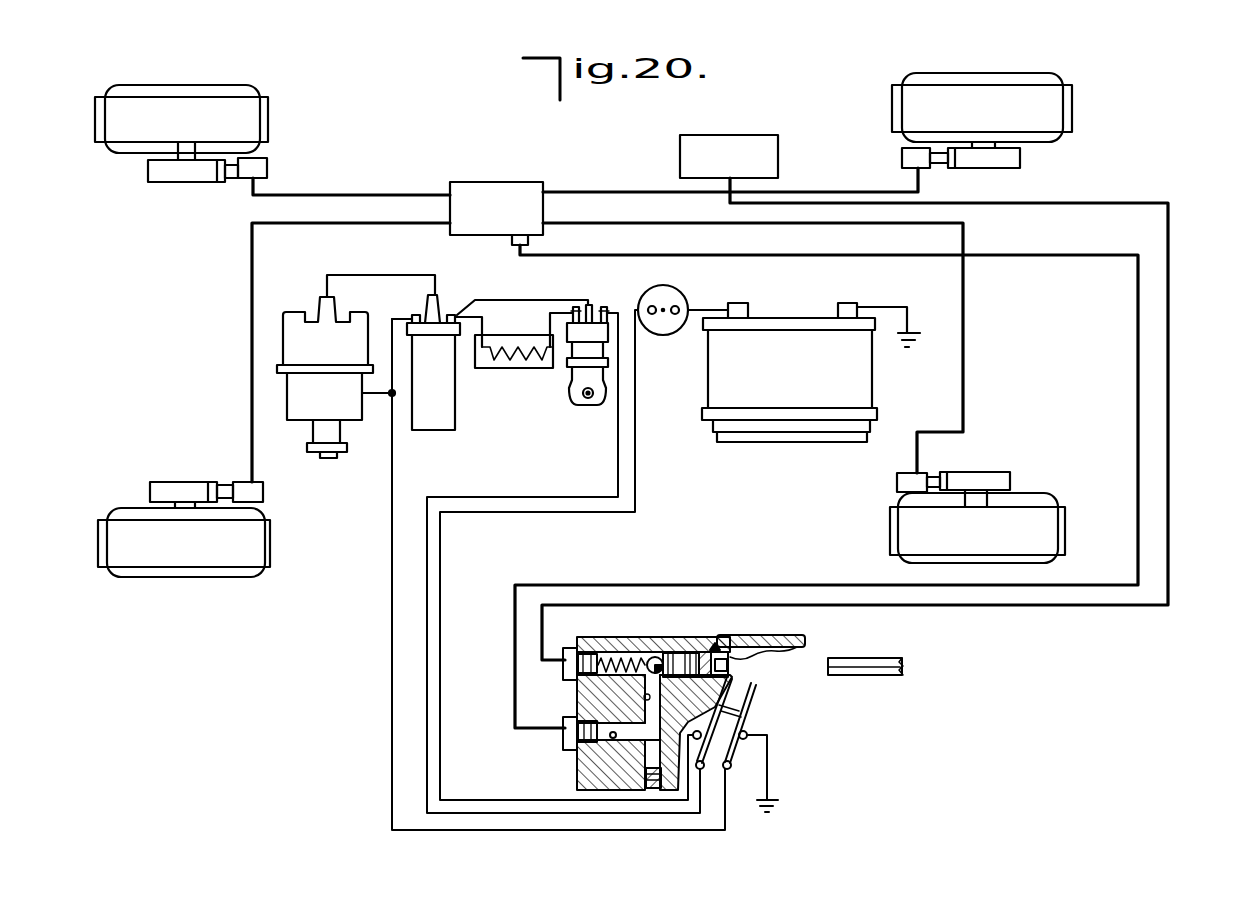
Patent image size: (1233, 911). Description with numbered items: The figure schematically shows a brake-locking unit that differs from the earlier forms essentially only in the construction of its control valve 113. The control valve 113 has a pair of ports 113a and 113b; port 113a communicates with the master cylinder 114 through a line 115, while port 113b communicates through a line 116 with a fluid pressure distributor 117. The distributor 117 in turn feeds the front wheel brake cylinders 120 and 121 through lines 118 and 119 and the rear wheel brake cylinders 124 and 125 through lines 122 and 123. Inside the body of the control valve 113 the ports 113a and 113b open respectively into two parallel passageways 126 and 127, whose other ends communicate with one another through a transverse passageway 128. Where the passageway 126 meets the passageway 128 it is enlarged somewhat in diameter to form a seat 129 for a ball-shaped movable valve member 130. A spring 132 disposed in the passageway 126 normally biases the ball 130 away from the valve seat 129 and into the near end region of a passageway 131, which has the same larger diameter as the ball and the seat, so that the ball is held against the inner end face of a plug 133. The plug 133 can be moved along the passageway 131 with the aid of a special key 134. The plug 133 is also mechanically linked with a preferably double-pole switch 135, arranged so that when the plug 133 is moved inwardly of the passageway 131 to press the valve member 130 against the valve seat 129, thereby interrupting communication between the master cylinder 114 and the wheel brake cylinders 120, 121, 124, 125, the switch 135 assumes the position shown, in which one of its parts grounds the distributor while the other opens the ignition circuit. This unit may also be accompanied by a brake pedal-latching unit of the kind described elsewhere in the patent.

The control valve 113 is at (633, 636).
The port 113a is at (562, 647).
The port 113b is at (566, 740).
The master cylinder 114 is at (760, 142).
The line 115 is at (1172, 410).
The line 116 is at (1136, 405).
The fluid pressure distributor 117 is at (493, 187).
The line 118 is at (392, 190).
The line 119 is at (250, 318).
The front wheel brake cylinder 120 is at (267, 167).
The front wheel brake cylinder 121 is at (243, 483).
The line 122 is at (592, 190).
The line 123 is at (968, 360).
The rear wheel brake cylinder 124 is at (902, 156).
The rear wheel brake cylinder 125 is at (895, 482).
The passageway 126 is at (590, 682).
The passageway 127 is at (613, 738).
The transverse passageway 128 is at (644, 697).
The seat 129 is at (652, 656).
The movable valve member 130 is at (668, 652).
The passageway 131 is at (688, 651).
The spring 132 is at (605, 656).
The plug 133 is at (712, 645).
The special key 134 is at (870, 658).
The double-pole switch 135 is at (736, 745).